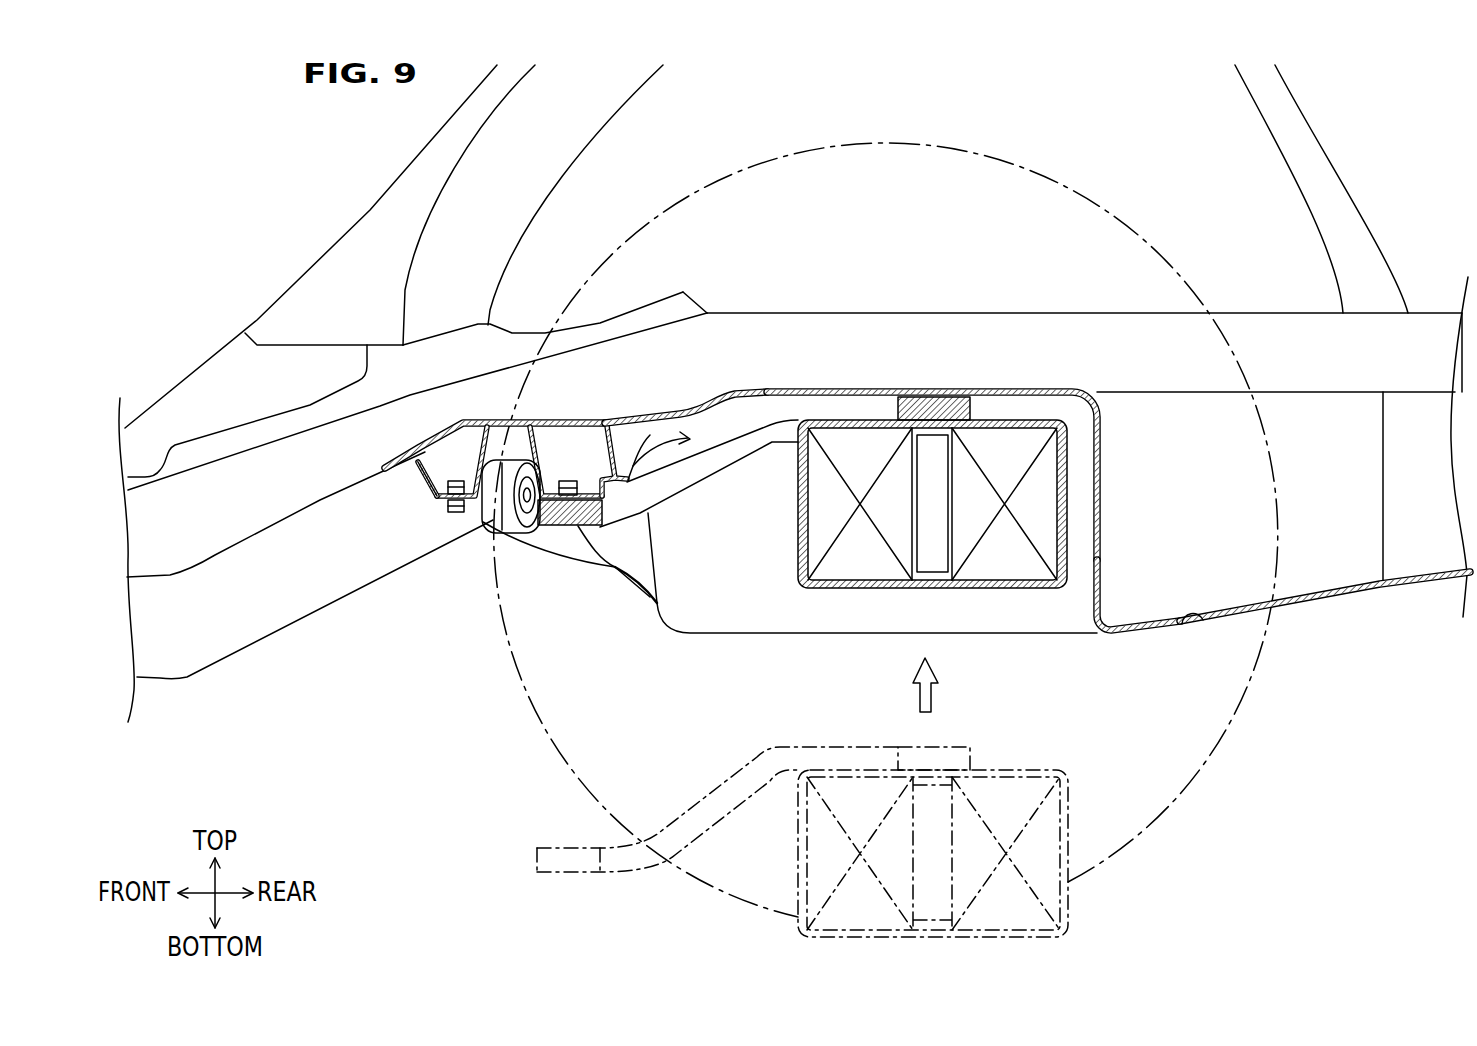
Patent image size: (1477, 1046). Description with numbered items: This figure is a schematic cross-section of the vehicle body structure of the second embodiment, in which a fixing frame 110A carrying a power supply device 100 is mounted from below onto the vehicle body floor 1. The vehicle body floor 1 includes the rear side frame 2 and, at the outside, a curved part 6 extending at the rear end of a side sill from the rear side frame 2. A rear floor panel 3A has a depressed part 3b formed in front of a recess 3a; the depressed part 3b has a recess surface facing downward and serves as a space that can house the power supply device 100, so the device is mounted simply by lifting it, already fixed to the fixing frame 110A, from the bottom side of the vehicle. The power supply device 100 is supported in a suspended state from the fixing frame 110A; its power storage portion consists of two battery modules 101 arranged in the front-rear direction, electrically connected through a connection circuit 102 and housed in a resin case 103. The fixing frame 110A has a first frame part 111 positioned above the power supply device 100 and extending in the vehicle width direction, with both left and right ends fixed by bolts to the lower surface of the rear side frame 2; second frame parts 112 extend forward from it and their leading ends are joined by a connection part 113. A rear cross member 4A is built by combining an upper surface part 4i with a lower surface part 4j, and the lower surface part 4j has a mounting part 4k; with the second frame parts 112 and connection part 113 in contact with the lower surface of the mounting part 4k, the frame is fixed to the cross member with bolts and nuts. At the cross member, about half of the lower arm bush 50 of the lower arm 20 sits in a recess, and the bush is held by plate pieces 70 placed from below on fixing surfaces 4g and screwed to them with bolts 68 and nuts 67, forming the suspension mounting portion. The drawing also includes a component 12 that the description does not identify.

The vehicle body floor 1 is at (1369, 614).
The rear side frame 2 is at (1271, 323).
The rear floor panel 3A is at (1296, 608).
The recess 3a is at (1200, 626).
The depressed part 3b is at (1097, 600).
The rear cross member 4A is at (438, 421).
The fixing surface 4g is at (436, 500).
The upper surface part 4i is at (403, 458).
The lower surface part 4j is at (406, 478).
The mounting part 4k is at (580, 527).
The curved part 6 is at (243, 470).
The rear wheel 12 is at (1242, 703).
The lower arm 20 is at (558, 582).
The lower arm bush 50 is at (503, 520).
The nut 67 is at (427, 487).
The bolt 68 is at (457, 514).
The plate piece 70 is at (440, 516).
The power supply device 100 is at (1049, 608).
The battery module 101 is at (856, 554).
The connection circuit 102 is at (931, 554).
The case 103 is at (798, 553).
The fixing frame 110A is at (714, 415).
The first frame part 111 is at (970, 410).
The second frame part 112 is at (832, 408).
The connection part 113 is at (621, 570).